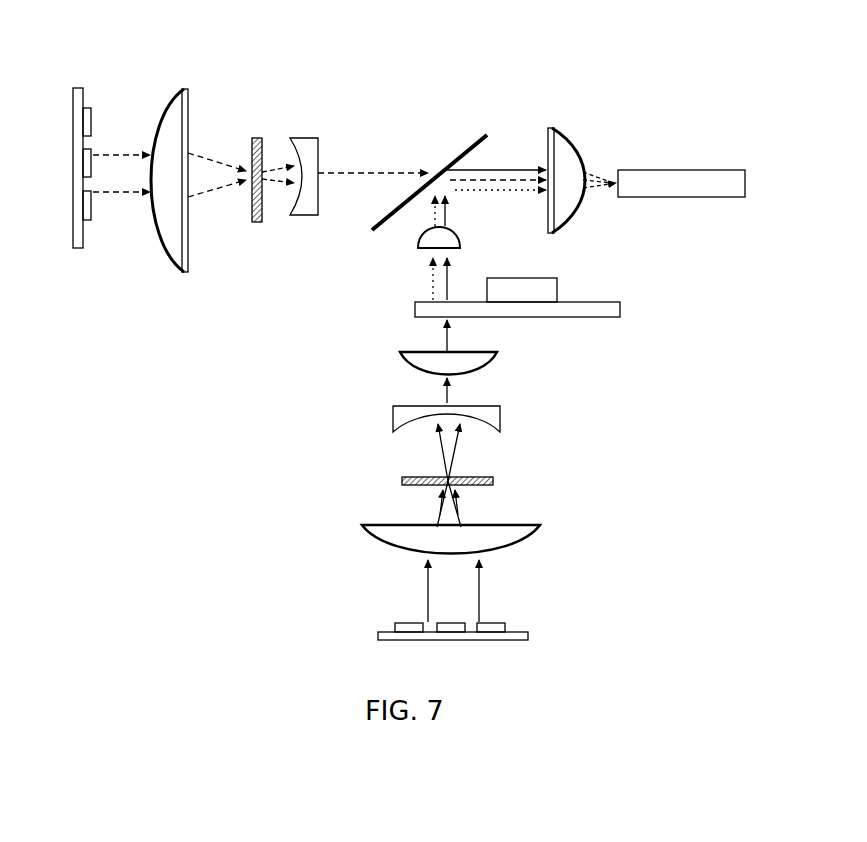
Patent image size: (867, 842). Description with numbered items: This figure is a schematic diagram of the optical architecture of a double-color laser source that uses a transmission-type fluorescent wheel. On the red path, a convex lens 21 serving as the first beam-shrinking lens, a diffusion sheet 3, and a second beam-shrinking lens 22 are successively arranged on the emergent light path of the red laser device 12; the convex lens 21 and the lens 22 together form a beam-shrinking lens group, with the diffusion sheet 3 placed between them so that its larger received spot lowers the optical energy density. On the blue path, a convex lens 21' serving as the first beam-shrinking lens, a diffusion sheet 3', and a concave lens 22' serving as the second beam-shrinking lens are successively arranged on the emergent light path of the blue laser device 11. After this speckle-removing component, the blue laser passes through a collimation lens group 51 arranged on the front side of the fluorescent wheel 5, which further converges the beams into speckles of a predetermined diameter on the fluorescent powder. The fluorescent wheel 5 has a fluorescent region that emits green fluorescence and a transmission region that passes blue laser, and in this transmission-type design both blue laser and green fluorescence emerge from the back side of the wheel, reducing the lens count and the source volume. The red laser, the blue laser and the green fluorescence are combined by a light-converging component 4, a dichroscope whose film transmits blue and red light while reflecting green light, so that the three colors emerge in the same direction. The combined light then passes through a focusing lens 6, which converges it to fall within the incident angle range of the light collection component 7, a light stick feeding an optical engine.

The red laser device 12 is at (80, 252).
The convex lens 21 is at (192, 147).
The diffusion sheet 3 is at (282, 138).
The convex lenses group 22 is at (339, 144).
The light-converging component 4 is at (465, 135).
The focusing lens 6 is at (572, 145).
The light collection component 7 is at (680, 165).
The fluorescent wheel 5 is at (628, 300).
The collimation lens group 51 is at (480, 365).
The concave lens 22' is at (410, 441).
The diffusion sheet 3' is at (500, 484).
The convex lens 21' is at (410, 554).
The blue laser device 11 is at (528, 620).